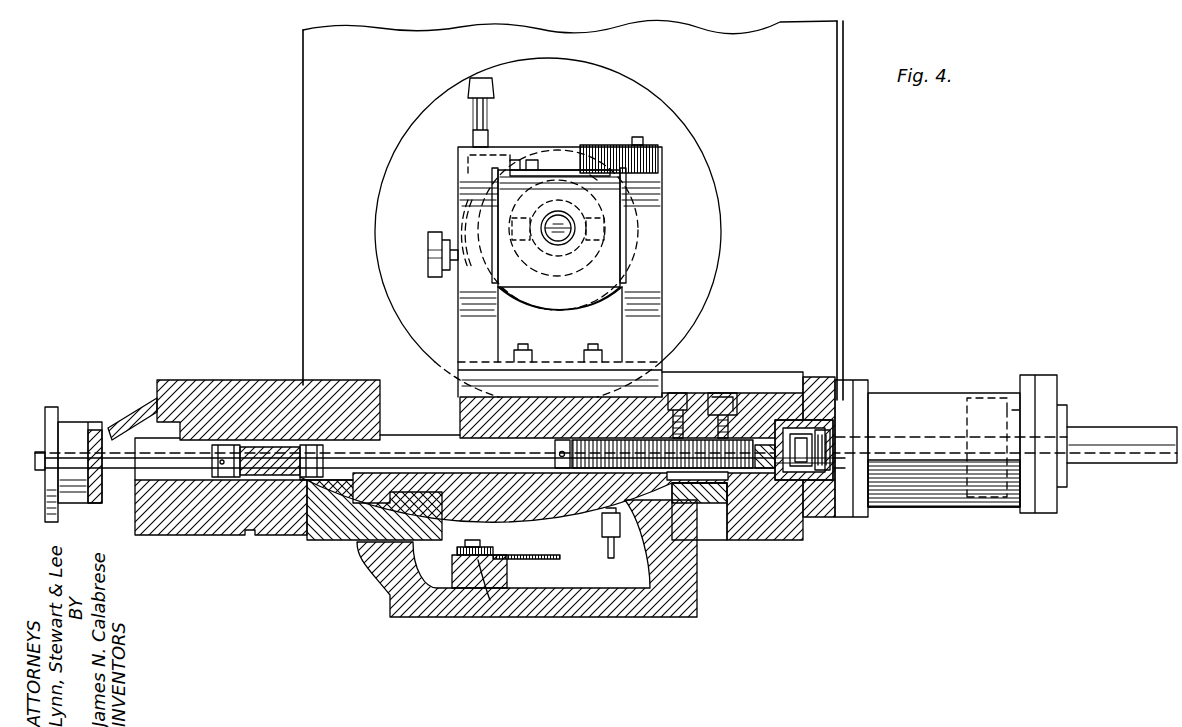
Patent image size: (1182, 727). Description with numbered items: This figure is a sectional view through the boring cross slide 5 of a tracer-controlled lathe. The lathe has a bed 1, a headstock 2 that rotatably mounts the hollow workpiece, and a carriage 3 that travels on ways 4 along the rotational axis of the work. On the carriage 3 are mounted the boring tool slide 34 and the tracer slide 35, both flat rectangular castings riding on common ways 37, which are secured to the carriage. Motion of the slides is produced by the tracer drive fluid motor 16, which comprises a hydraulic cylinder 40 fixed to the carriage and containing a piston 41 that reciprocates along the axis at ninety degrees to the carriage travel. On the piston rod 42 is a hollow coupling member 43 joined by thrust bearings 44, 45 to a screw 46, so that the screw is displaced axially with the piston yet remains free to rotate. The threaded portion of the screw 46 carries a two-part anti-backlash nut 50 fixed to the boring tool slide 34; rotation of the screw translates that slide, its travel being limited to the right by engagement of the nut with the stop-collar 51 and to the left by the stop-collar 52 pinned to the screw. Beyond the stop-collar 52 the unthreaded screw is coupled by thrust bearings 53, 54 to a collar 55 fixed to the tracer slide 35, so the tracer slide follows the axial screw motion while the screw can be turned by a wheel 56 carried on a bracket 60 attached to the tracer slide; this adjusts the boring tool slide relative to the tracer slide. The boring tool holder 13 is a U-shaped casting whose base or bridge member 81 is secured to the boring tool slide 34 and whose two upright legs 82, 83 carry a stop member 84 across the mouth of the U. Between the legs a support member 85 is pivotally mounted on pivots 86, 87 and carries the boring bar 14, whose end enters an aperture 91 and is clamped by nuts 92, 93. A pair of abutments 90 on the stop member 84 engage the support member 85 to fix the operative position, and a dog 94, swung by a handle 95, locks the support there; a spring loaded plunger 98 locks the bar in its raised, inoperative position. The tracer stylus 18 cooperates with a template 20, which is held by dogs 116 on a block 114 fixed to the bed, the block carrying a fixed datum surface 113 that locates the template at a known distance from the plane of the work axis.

The bed 1 is at (398, 612).
The headstock 2 is at (845, 172).
The carriage 3 is at (220, 525).
The ways 4 is at (335, 487).
The boring cross slide 5 is at (451, 409).
The holder 13 is at (657, 256).
The boring bar 14 is at (560, 213).
The fluid motor 16 is at (957, 391).
The stylus 18 is at (606, 545).
The template 20 is at (538, 565).
The boring tool slide 34 is at (750, 400).
The tracer slide 35 is at (240, 380).
The common ways 37 is at (423, 434).
The hydraulic cylinder 40 is at (895, 393).
The piston 41 is at (985, 398).
The piston rod 42 is at (913, 433).
The hollow coupling member 43 is at (822, 517).
The thrust bearing 44 is at (797, 478).
The thrust bearing 45 is at (783, 478).
The screw 46 is at (762, 478).
The nut 50 is at (698, 400).
The stop-collar 51 is at (778, 430).
The stop-collar 52 is at (563, 440).
The thrust bearing 53 is at (311, 445).
The thrust bearing 54 is at (228, 445).
The collar 55 is at (277, 475).
The wheel 56 is at (52, 407).
The bracket 60 is at (122, 405).
The base or bridge member 81 is at (545, 362).
The leg 82 is at (460, 305).
The leg 83 is at (650, 307).
The stop member 84 is at (657, 158).
The support member 85 is at (603, 203).
The pivot 86 is at (645, 210).
The pivot 87 is at (462, 203).
The abutments 90 is at (515, 158).
The aperture 91 is at (567, 238).
The nut 92 is at (522, 272).
The nut 93 is at (553, 205).
The dog 94 is at (462, 158).
The handle 95 is at (470, 80).
The spring loaded plunger 98 is at (435, 277).
The fixed datum surface 113 is at (482, 562).
The block 114 is at (472, 582).
The dogs 116 is at (495, 550).